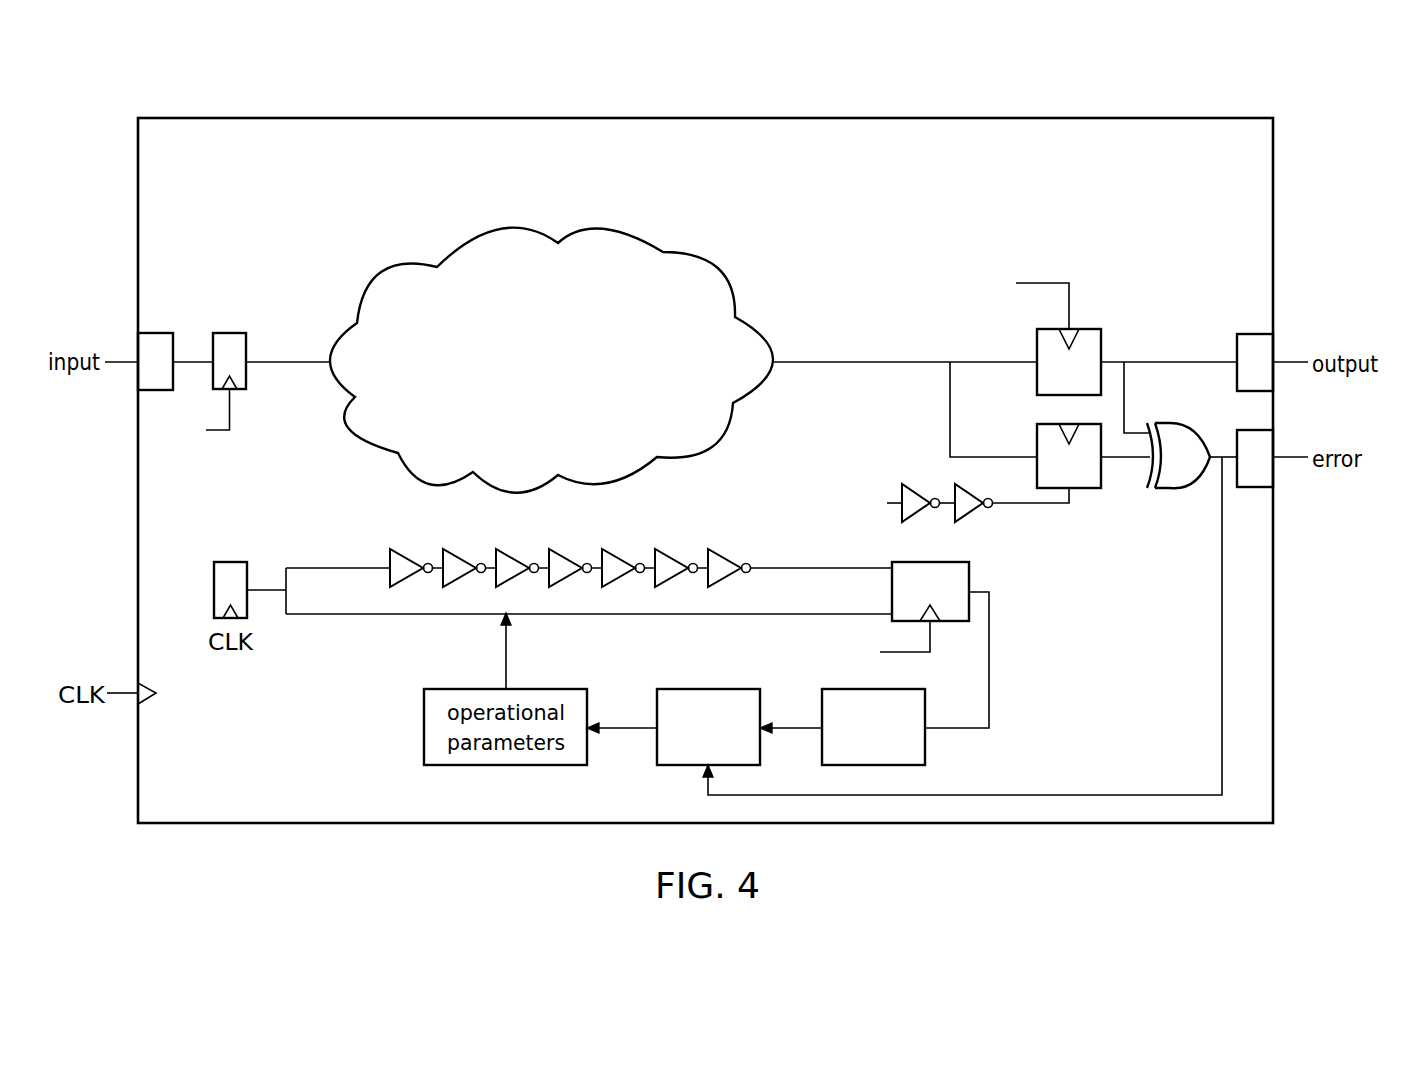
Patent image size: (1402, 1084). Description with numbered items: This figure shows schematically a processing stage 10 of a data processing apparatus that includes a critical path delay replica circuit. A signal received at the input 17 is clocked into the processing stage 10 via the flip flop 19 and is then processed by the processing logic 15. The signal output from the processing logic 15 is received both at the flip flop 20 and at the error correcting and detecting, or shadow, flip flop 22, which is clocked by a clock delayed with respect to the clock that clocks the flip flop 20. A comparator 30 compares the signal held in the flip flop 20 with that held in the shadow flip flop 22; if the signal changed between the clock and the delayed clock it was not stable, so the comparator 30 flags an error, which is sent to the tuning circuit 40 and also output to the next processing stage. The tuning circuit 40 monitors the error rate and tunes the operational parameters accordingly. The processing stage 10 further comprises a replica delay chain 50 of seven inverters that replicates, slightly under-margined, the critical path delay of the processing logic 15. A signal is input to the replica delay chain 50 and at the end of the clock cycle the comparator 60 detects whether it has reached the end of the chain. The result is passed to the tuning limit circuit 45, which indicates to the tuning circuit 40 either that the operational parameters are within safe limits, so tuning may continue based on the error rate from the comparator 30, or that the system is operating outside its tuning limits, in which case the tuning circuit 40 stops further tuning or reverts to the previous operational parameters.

The processing stage 10 is at (1276, 178).
The processing logic 15 is at (608, 228).
The input 17 is at (77, 343).
The flip flop 19 is at (229, 332).
The flip flop 20 is at (1043, 282).
The shadow flip flop 22 is at (1090, 489).
The comparator 30 is at (1167, 489).
The tuning circuit 40 is at (706, 689).
The tuning limit circuit 45 is at (925, 745).
The replica delay chain 50 is at (657, 547).
The comparator 60 is at (975, 575).